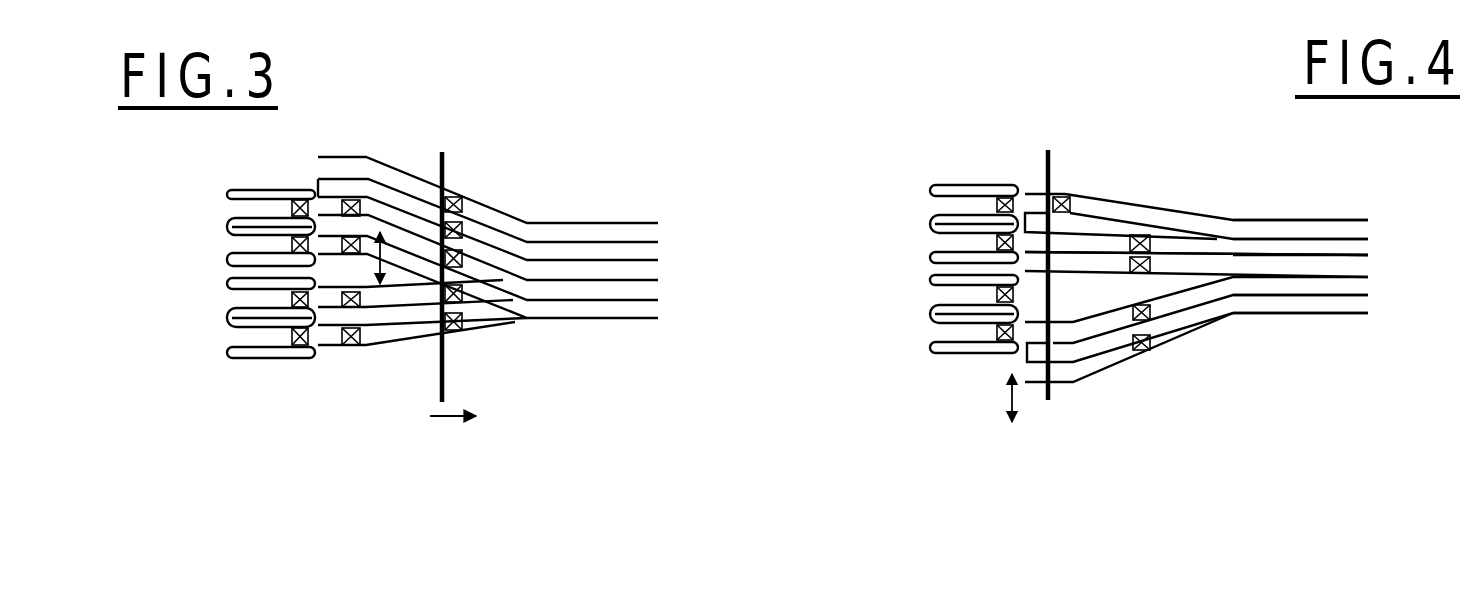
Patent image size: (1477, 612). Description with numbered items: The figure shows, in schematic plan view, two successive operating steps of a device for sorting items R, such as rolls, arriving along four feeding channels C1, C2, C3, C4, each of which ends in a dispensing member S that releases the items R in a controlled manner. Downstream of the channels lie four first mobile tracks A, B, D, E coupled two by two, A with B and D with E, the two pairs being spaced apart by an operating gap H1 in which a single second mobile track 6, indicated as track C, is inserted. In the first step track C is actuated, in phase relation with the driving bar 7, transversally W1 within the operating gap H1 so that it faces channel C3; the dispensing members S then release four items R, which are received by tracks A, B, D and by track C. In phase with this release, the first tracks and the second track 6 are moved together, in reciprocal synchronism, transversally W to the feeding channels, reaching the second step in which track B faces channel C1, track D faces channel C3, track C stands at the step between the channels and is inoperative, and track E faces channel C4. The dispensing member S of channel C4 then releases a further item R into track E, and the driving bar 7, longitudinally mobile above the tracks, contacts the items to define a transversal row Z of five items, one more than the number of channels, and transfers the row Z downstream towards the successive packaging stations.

In FIG. 3, the feeding channel C1 is at (237, 338).
In FIG. 3, the feeding channel C2 is at (237, 299).
In FIG. 3, the feeding channel C3 is at (247, 243).
In FIG. 3, the feeding channel C4 is at (247, 207).
In FIG. 3, the transversal movement within the operating gap W1 is at (412, 251).
In FIG. 3, the driving bar 7 is at (445, 156).
In FIG. 4, the driving bar 7 is at (1053, 150).
In FIG. 3, the item R is at (463, 228).
In FIG. 3, the transversal row Z is at (457, 339).
In FIG. 4, the dispensing member S is at (1015, 185).
In FIG. 4, the operating gap H1 is at (1110, 265).
In FIG. 4, the second mobile track 6 is at (1037, 300).
In FIG. 4, the first mobile track E is at (1330, 228).
In FIG. 4, the first mobile track D is at (1340, 248).
In FIG. 4, the second mobile track C is at (1343, 267).
In FIG. 4, the first mobile track B is at (1353, 285).
In FIG. 4, the first mobile track A is at (1335, 303).
In FIG. 4, the transversal movement of the tracks W is at (988, 402).